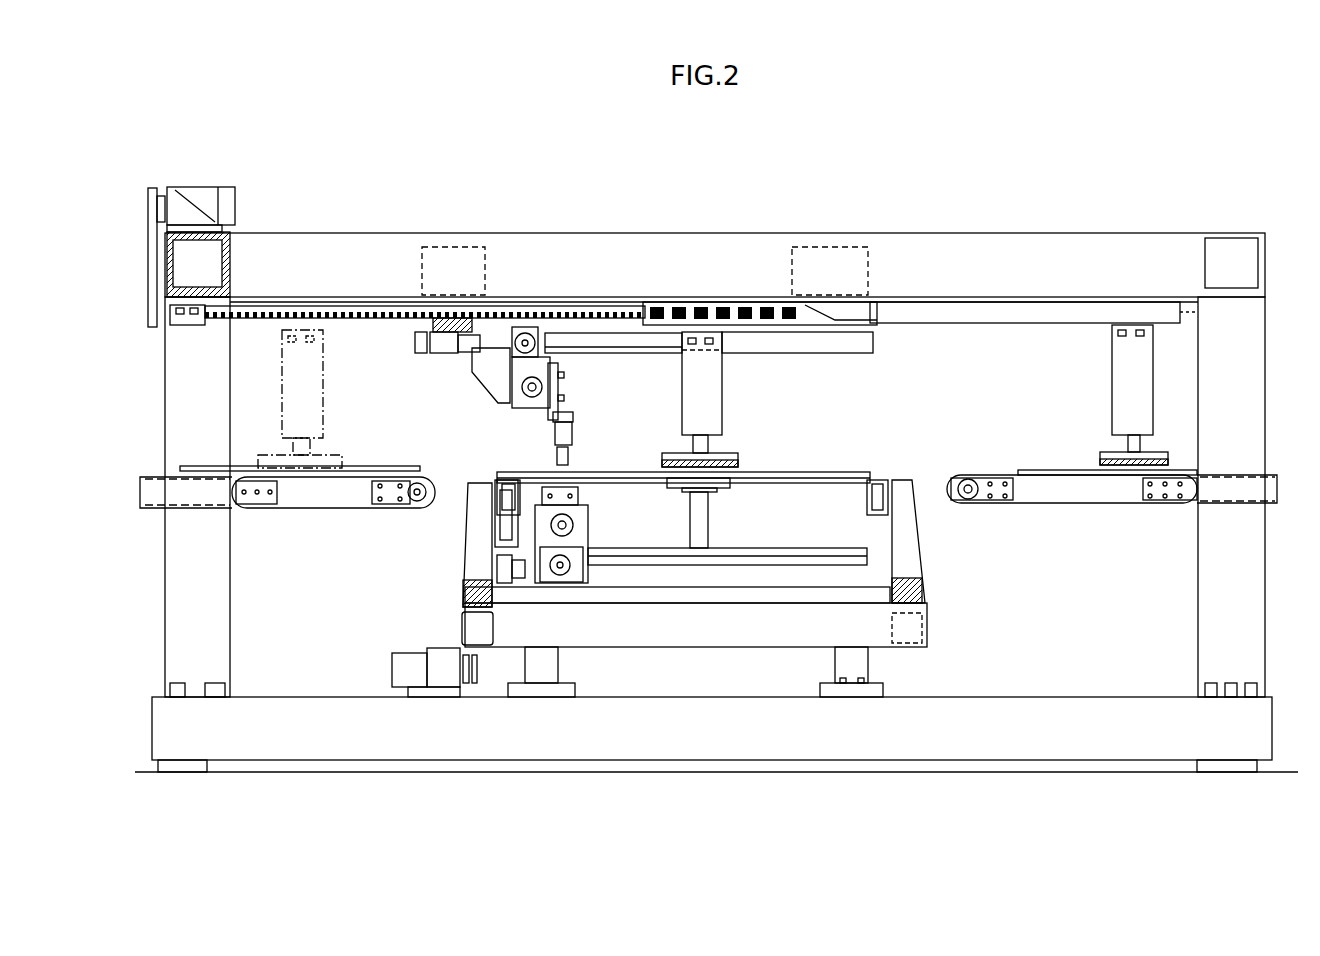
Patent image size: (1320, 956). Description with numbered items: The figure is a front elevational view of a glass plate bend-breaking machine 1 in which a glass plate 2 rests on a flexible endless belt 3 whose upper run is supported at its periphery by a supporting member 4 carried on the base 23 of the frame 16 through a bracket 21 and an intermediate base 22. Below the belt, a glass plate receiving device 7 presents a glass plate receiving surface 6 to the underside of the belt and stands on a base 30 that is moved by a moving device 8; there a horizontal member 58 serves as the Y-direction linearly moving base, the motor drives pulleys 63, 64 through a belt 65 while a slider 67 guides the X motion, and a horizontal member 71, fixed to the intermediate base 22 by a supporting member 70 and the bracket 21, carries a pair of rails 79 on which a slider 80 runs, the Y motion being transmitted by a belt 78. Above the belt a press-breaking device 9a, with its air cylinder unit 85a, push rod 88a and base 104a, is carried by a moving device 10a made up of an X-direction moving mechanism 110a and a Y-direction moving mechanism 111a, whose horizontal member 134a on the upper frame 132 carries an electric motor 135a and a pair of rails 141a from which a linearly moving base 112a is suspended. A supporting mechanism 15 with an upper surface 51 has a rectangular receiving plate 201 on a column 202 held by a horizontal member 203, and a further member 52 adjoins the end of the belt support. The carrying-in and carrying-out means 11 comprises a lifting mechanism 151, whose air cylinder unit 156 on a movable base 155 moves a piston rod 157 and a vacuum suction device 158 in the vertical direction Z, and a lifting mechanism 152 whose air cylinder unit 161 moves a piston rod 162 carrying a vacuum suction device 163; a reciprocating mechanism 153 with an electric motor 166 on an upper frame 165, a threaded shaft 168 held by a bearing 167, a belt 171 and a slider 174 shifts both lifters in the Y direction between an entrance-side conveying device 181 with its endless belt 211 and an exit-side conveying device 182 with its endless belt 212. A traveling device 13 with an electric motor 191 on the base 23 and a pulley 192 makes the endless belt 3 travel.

The glass plate bend-breaking machine 1 is at (1215, 206).
The glass plate 2 is at (360, 467).
The flexible endless belt 3 is at (858, 472).
The supporting member 4 is at (505, 505).
The glass plate receiving surface 6 is at (575, 478).
The glass plate receiving device 7 is at (597, 515).
The moving device 8 is at (596, 598).
The press-breaking device 9a is at (570, 400).
The moving device 10a is at (472, 368).
The carrying-in and carrying-out means 11 is at (724, 378).
The traveling device 13 is at (388, 665).
The supporting mechanism 15 is at (722, 504).
The frame 16 is at (1065, 233).
The bracket 21 is at (468, 522).
The intermediate base 22 is at (745, 642).
The base 23 is at (1043, 712).
The base 30 is at (558, 487).
The upper surface 51 is at (282, 370).
The support 52 is at (890, 480).
The horizontal member 58 is at (578, 533).
The pulley 63 is at (540, 505).
The pulley 64 is at (565, 585).
The belt 65 is at (550, 585).
The slider 67 is at (510, 530).
The supporting member 70 is at (720, 620).
The horizontal member 71 is at (695, 592).
The belt 78 is at (500, 566).
The pair of rails 79 is at (730, 556).
The slider 80 is at (622, 556).
The nozzle holder 85a is at (573, 432).
The nozzle 88a is at (569, 458).
The bracket 104a is at (553, 418).
The pulley 110a is at (532, 338).
The knob 111a is at (413, 340).
The pulley unit 112a is at (556, 385).
The upper frame 132 is at (710, 250).
The plate 134a is at (848, 337).
The motor 135a is at (446, 342).
The arm 141a is at (810, 353).
The lifting mechanism 151 is at (722, 398).
The lifting mechanism 152 is at (1110, 372).
The reciprocating mechanism 153 is at (205, 183).
The movable base 155 is at (945, 324).
The air cylinder unit 156 is at (716, 432).
The piston rod 157 is at (722, 446).
The vacuum suction device 158 is at (742, 458).
The air cylinder unit 161 is at (1120, 395).
The piston rod 162 is at (1128, 448).
The vacuum suction device 163 is at (1098, 458).
The upper frame 165 is at (235, 248).
The electric motor 166 is at (205, 195).
The bearing 167 is at (192, 326).
The threaded shaft 168 is at (380, 306).
The belt 171 is at (148, 280).
The slider 174 is at (655, 306).
The conveying device 181 is at (1068, 508).
The conveying device 182 is at (315, 510).
The electric motor 191 is at (410, 660).
The pulley 192 is at (480, 668).
The rectangular receiving plate 201 is at (678, 490).
The column 202 is at (710, 502).
The horizontal member 203 is at (800, 556).
The endless belt 211 is at (1115, 506).
The endless belt 212 is at (345, 510).
The Z direction Z is at (652, 446).